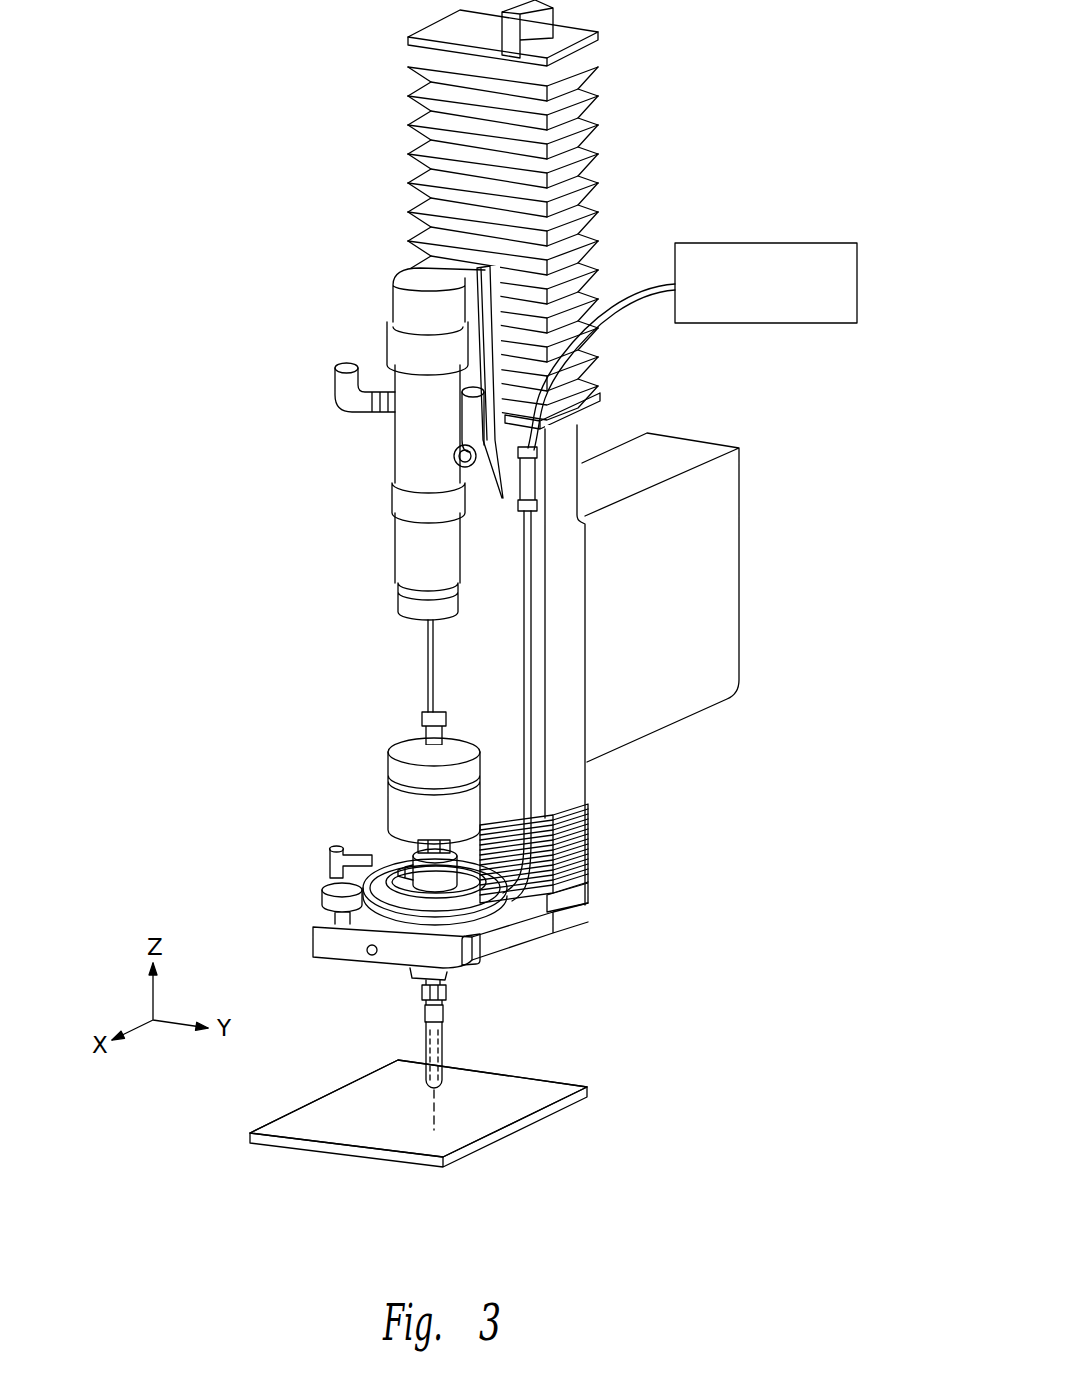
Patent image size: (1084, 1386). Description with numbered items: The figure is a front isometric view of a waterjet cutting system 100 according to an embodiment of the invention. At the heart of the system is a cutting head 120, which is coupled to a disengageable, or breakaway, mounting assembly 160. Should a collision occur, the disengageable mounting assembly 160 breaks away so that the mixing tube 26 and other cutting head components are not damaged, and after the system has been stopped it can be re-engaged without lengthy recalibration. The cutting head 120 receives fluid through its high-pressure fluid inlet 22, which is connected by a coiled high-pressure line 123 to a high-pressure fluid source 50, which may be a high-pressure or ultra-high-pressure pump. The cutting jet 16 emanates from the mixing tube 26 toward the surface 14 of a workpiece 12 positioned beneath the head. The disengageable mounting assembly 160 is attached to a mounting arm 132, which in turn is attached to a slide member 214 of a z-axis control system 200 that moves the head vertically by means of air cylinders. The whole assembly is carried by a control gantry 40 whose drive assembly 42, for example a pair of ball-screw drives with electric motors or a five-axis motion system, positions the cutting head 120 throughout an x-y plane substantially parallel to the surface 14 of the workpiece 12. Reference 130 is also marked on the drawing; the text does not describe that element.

The waterjet cutting system 100 is at (154, 544).
The workpiece 12 is at (598, 1072).
The surface 14 is at (493, 1113).
The cutting jet 16 is at (430, 1107).
The high-pressure fluid inlet 22 is at (407, 862).
The mixing tube 26 is at (448, 1045).
The control gantry 40 is at (706, 177).
The drive assembly 42 is at (697, 438).
The high-pressure fluid source 50 is at (857, 280).
The cutting head 120 is at (372, 772).
The coiled high-pressure line 123 is at (550, 915).
The cutting head assembly 130 is at (611, 890).
The mounting arm 132 is at (315, 932).
The disengageable mounting assembly 160 is at (513, 860).
The z-axis control system 200 is at (632, 407).
The slide member 214 is at (588, 791).